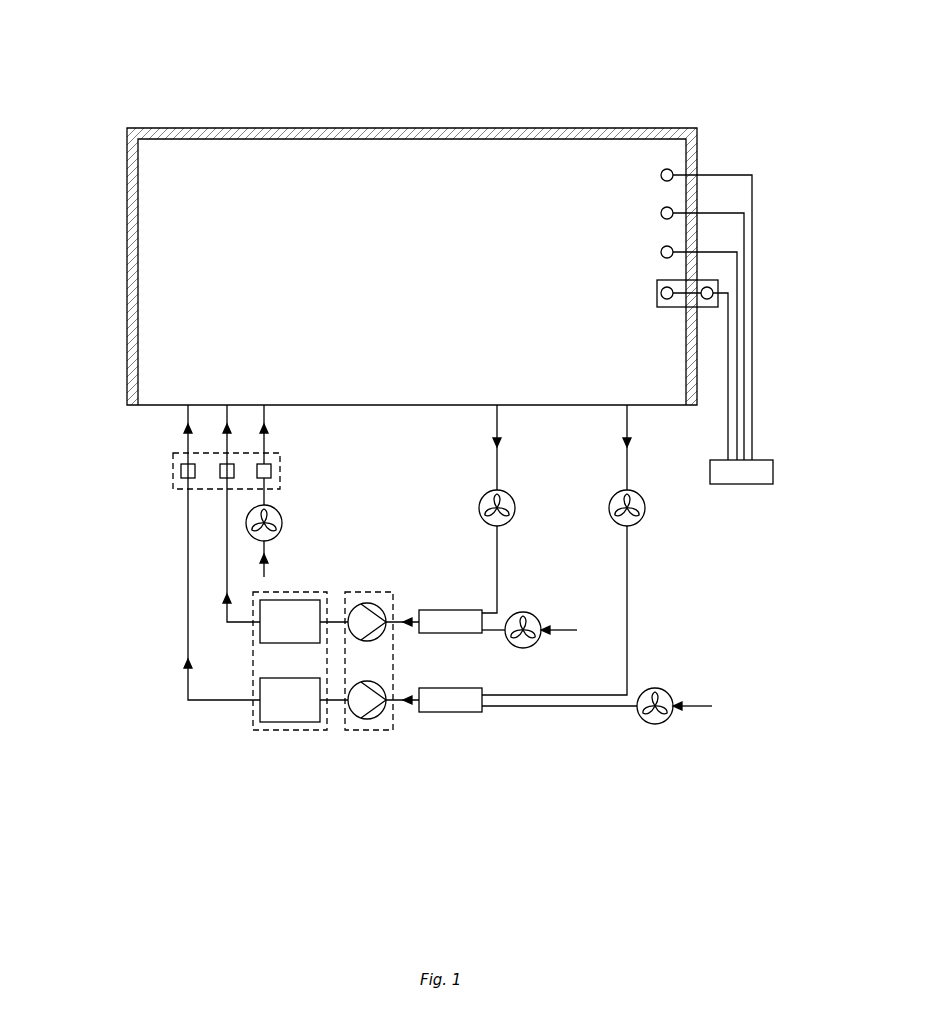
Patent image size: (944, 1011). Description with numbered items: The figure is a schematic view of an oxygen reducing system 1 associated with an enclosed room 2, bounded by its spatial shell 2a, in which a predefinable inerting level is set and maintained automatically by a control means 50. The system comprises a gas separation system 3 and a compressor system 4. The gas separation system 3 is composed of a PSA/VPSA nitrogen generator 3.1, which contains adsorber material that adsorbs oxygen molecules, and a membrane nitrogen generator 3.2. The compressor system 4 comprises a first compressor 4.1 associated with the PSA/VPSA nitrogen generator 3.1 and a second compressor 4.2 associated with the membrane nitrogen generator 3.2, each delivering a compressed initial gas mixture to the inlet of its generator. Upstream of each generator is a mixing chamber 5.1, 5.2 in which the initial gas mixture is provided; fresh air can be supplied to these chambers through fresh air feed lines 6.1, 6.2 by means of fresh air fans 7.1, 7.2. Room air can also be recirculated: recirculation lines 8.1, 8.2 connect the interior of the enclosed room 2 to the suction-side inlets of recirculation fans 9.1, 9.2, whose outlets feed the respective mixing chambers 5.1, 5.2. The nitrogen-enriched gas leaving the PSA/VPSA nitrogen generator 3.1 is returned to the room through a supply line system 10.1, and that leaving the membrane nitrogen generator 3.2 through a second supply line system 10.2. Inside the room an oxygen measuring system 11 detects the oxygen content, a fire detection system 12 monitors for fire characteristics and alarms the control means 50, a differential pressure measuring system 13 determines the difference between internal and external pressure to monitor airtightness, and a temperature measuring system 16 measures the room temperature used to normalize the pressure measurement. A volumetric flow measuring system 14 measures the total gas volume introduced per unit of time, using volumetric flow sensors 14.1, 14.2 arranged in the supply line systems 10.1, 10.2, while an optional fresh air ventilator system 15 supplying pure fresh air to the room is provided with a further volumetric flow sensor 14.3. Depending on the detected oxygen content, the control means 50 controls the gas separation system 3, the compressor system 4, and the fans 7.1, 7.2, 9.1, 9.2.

The oxygen reducing system 1 is at (404, 584).
The enclosed room 2 is at (308, 165).
The spatial shell 2a is at (412, 128).
The gas separation system 3 is at (298, 674).
The PSA/VPSA nitrogen generator 3.1 is at (285, 618).
The membrane nitrogen generator 3.2 is at (280, 720).
The compressor system 4 is at (381, 667).
The first compressor 4.1 is at (370, 602).
The second compressor 4.2 is at (367, 717).
The first mixing chamber 5.1 is at (442, 625).
The second mixing chamber 5.2 is at (442, 703).
The fresh air feed line 6.1 is at (490, 633).
The fresh air feed line 6.2 is at (535, 707).
The fresh air fan 7.1 is at (540, 617).
The fresh air fan 7.2 is at (673, 694).
The recirculation line 8.1 is at (495, 460).
The recirculation line 8.2 is at (622, 460).
The recirculation fan 9.1 is at (480, 508).
The recirculation fan 9.2 is at (610, 508).
The supply line system 10.1 is at (237, 625).
The second supply line system 10.2 is at (210, 702).
The oxygen measuring system 11 is at (660, 173).
The fire detection system 12 is at (660, 212).
The differential pressure measuring system 13 is at (656, 284).
The volumetric flow measuring system 14 is at (214, 478).
The volumetric flow sensor 14.1 is at (180, 490).
The volumetric flow sensor 14.2 is at (224, 490).
The volumetric flow sensor 14.3 is at (273, 462).
The fresh air ventilator system 15 is at (282, 512).
The temperature measuring system 16 is at (660, 250).
The control means 50 is at (720, 472).